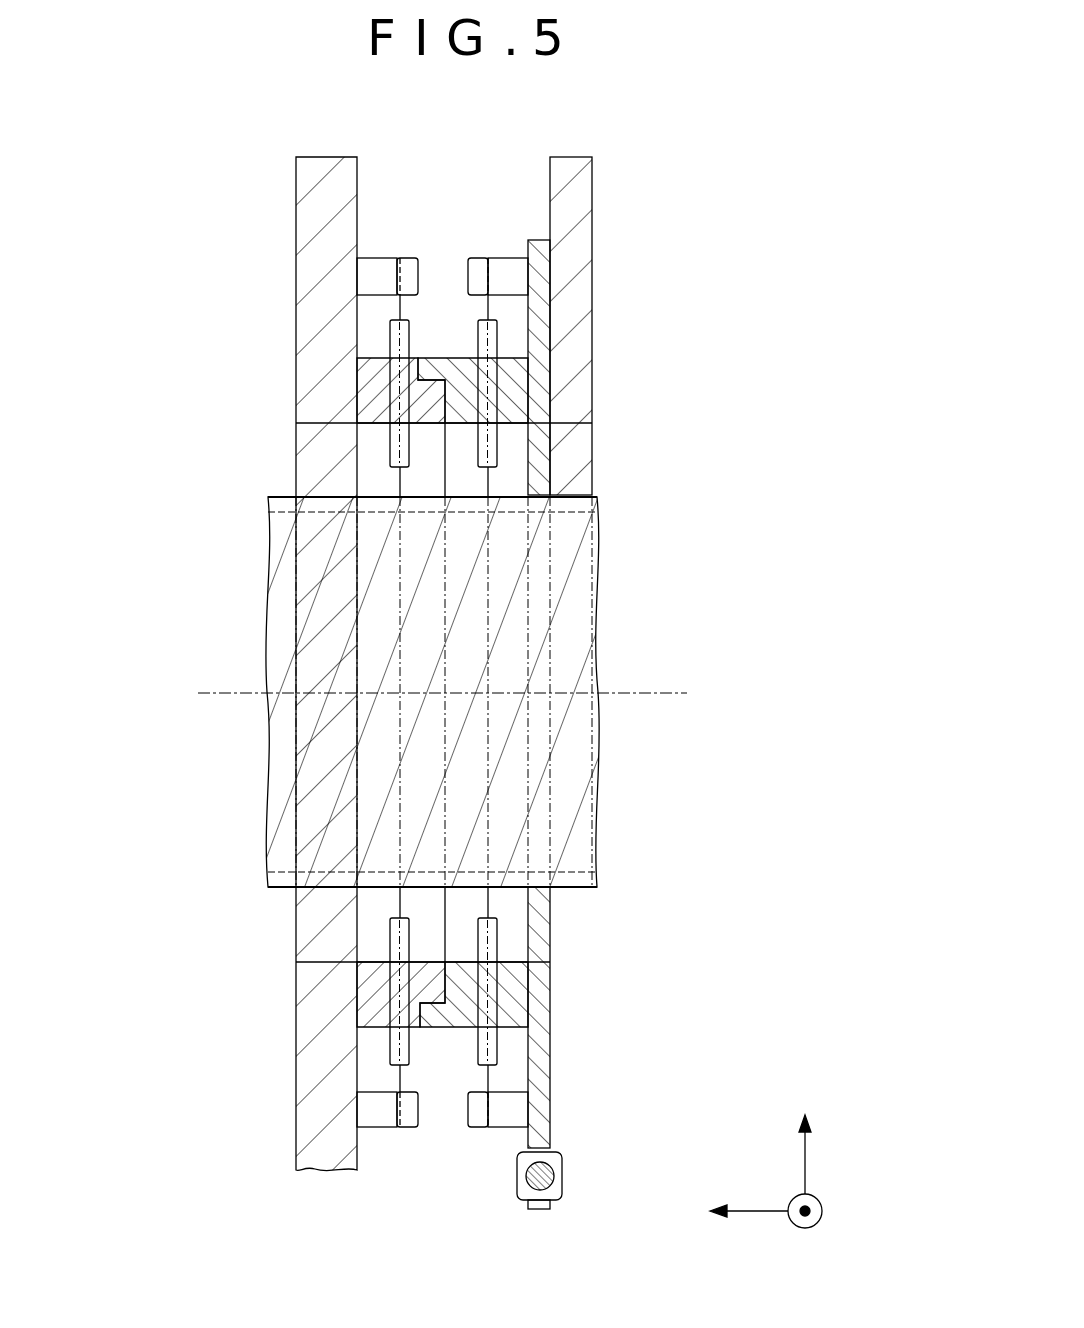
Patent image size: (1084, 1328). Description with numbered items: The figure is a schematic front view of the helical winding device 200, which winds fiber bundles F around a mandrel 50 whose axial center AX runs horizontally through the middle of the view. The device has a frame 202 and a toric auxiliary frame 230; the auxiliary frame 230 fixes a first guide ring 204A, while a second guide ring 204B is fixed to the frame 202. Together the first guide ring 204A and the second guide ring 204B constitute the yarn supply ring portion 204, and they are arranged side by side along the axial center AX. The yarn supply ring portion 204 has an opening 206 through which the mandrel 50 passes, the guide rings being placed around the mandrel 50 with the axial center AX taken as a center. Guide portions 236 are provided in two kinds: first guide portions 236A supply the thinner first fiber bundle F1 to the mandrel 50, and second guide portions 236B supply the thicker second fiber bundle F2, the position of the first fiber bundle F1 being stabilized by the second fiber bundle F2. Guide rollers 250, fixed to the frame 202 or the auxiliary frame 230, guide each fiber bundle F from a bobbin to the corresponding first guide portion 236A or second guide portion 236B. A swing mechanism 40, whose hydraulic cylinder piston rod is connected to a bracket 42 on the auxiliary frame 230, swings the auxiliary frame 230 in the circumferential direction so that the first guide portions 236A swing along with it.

The helical winding device 200 is at (739, 143).
The frame 202 is at (292, 243).
The auxiliary frame 230 is at (548, 284).
The guide roller 250 is at (417, 268).
The yarn supply ring portion 204 is at (440, 692).
The first guide ring 204A is at (515, 372).
The second guide ring 204B is at (362, 379).
The opening 206 is at (323, 425).
The guide portion 236 is at (432, 697).
The first guide portion 236A is at (498, 467).
The second guide portion 236B is at (391, 467).
The mandrel 50 is at (580, 807).
The axial center AX is at (647, 692).
The fiber bundle F is at (424, 1106).
The first fiber bundle F1 is at (490, 1078).
The second fiber bundle F2 is at (392, 1078).
The swing mechanism 40 is at (562, 1168).
The bracket 42 is at (532, 1209).